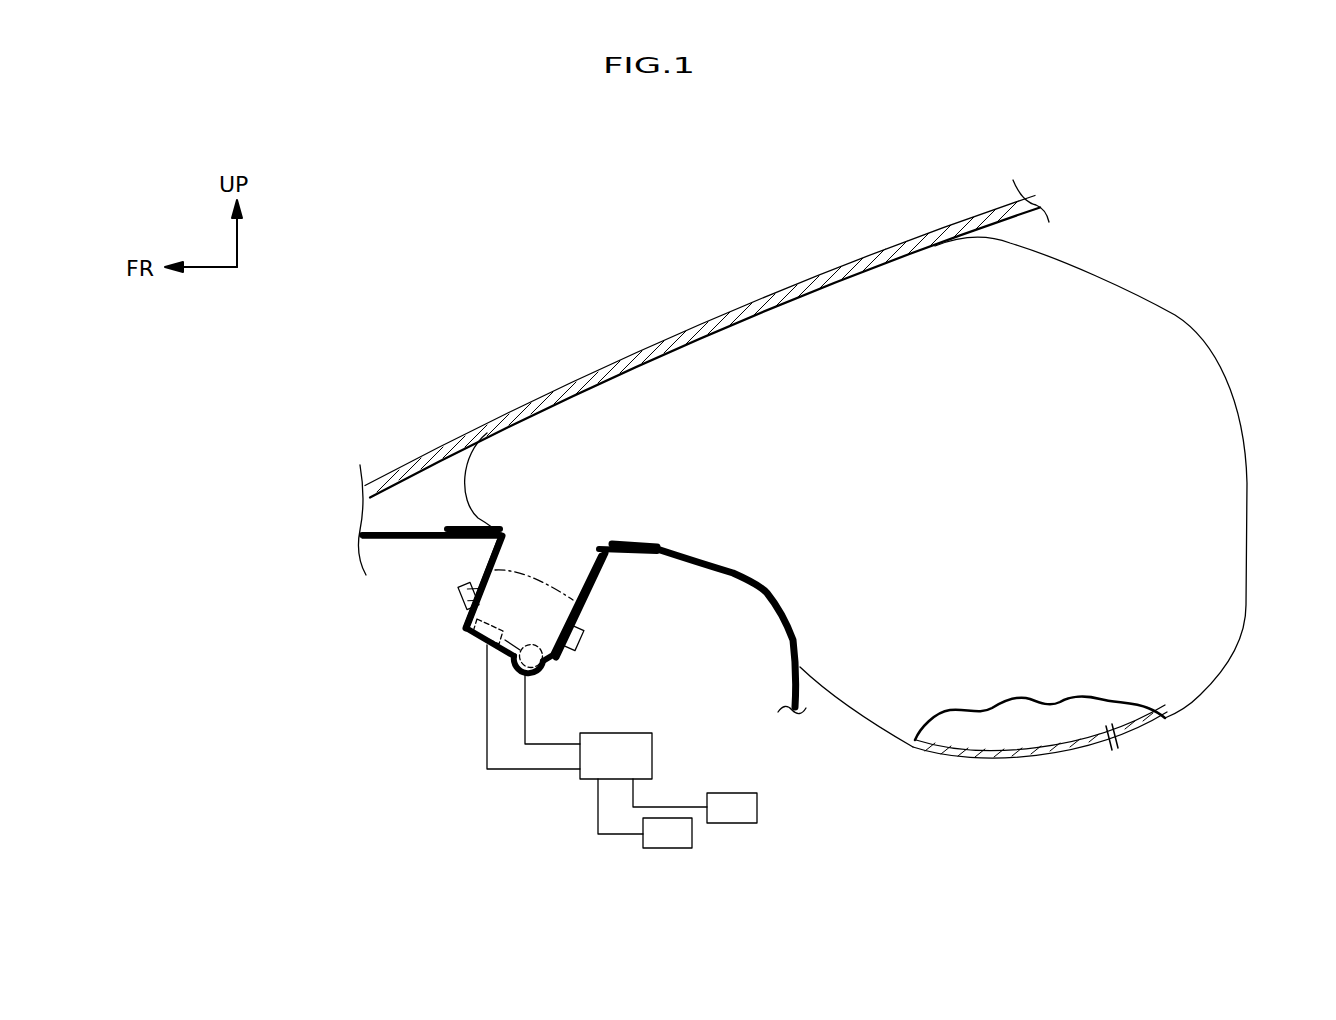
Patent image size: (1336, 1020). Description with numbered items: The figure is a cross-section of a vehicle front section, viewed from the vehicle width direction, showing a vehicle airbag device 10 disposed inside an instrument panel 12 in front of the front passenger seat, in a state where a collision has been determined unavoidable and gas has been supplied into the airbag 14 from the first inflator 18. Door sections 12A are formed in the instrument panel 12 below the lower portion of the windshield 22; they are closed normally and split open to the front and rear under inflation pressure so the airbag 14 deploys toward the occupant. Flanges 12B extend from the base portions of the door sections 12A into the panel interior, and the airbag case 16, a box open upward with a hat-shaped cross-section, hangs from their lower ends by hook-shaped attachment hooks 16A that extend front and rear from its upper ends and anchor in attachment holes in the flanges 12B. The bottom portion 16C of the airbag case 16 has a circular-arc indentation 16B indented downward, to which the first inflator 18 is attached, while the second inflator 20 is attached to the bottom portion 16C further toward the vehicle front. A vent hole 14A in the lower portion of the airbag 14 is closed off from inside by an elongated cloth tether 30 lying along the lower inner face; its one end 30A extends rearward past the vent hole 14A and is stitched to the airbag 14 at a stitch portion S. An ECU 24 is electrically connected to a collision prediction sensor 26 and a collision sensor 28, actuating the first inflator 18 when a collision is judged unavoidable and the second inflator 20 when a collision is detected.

The vehicle airbag device 10 is at (335, 632).
The instrument panel 12 is at (397, 525).
The door sections 12A is at (455, 526).
The flanges 12B is at (477, 577).
The airbag 14 is at (526, 569).
The vent hole 14A is at (1067, 756).
The airbag case 16 is at (519, 633).
The attachment hooks 16A is at (465, 590).
The indentation 16B is at (538, 675).
The bottom portion 16C is at (510, 646).
The first inflator 18 is at (544, 663).
The second inflator 20 is at (478, 640).
The windshield 22 is at (580, 382).
The ECU 24 is at (652, 756).
The collision prediction sensor 26 is at (757, 806).
The collision sensor 28 is at (692, 835).
The tether 30 is at (987, 757).
The one end 30A is at (1114, 748).
The stitch portion S is at (1118, 750).